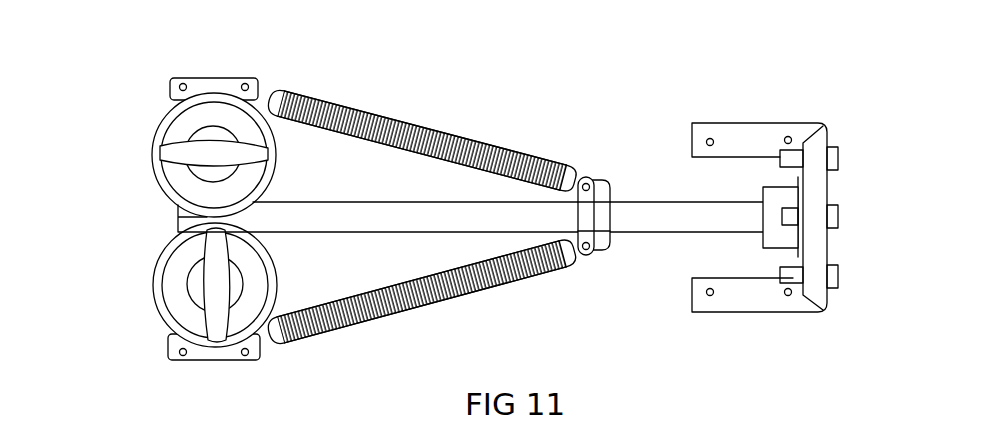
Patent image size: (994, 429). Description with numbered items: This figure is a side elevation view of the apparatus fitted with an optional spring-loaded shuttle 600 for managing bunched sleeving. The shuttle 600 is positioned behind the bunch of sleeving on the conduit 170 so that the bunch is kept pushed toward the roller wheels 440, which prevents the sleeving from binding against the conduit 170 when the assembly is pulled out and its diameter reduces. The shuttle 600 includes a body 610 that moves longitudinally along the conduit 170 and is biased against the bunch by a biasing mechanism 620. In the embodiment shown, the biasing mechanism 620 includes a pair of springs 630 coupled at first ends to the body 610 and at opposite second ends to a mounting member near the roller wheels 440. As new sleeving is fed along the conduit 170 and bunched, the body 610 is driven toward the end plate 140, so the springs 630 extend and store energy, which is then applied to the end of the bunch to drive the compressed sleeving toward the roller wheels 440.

The end plate 140 is at (828, 167).
The conduit 170 is at (410, 215).
The roller wheels 440 is at (165, 120).
The shuttle 600 is at (510, 190).
The body 610 is at (598, 208).
The biasing mechanism 620 is at (413, 315).
The springs 630 is at (350, 107).